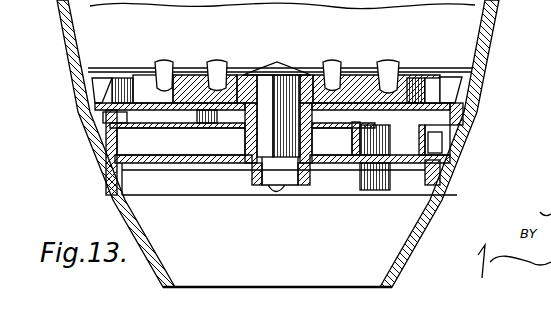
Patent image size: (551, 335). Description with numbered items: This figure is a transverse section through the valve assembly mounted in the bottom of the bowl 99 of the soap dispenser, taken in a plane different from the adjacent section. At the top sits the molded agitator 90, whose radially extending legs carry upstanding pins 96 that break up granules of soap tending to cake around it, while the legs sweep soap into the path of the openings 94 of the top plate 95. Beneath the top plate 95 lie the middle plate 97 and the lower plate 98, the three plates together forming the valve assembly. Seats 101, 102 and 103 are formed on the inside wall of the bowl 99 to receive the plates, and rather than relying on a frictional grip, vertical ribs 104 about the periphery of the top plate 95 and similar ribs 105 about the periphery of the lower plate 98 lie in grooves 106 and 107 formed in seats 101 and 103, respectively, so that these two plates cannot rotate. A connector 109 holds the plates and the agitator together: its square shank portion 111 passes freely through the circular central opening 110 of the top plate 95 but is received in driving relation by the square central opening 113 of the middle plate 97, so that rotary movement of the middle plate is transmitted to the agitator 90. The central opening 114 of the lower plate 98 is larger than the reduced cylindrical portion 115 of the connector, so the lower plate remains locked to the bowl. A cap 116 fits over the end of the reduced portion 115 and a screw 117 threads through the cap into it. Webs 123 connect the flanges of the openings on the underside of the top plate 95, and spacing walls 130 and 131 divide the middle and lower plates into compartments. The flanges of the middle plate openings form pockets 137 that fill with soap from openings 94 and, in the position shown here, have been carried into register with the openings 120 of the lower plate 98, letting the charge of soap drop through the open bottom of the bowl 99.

The agitator 90 is at (134, 98).
The openings of top plate 94 is at (178, 108).
The top plate 95 is at (468, 108).
The upstanding pins 96 is at (395, 66).
The middle plate 97 is at (463, 117).
The lower plate 98 is at (442, 162).
The bowl 99 is at (490, 24).
The seat 101 is at (95, 131).
The seat 102 is at (100, 143).
The seat 103 is at (112, 188).
The vertical ribs 104 is at (84, 107).
The ribs 105 is at (104, 160).
The groove 106 is at (92, 110).
The groove 107 is at (108, 175).
The connector 109 is at (266, 63).
The central opening in top plate 110 is at (316, 97).
The square shank portion 111 is at (292, 80).
The central opening in middle plate 113 is at (314, 144).
The central opening in bottom plate 114 is at (330, 170).
The reduced cylindrical portion 115 is at (298, 168).
The cap 116 is at (262, 178).
The screw 117 is at (277, 198).
The openings in bottom plate 120 is at (430, 170).
The webs 123 is at (176, 110).
The spacing wall 130 is at (150, 165).
The spacing wall 131 is at (192, 198).
The pockets 137 is at (445, 140).